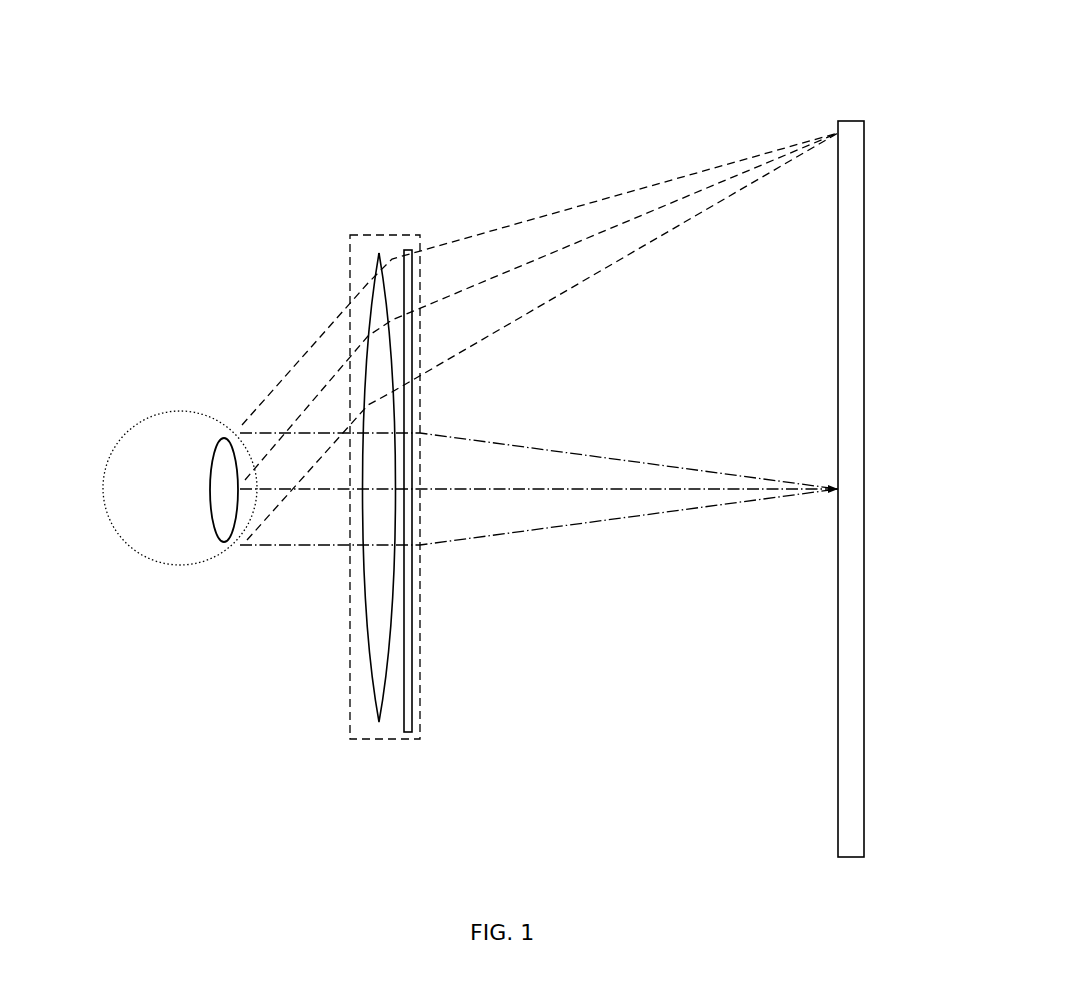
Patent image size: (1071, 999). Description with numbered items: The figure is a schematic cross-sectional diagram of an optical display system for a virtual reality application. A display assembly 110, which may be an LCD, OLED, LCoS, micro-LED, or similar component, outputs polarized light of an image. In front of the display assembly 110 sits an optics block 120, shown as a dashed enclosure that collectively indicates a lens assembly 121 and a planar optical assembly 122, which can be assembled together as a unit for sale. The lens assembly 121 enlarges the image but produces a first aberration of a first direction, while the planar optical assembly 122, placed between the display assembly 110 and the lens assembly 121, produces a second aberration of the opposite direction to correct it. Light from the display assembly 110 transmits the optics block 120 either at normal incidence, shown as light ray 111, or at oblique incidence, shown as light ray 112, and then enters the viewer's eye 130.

The display assembly 110 is at (848, 121).
The light ray 111 is at (730, 415).
The light ray 112 is at (752, 110).
The optics block 120 is at (351, 695).
The lens assembly 121 is at (366, 272).
The planar optical assembly 122 is at (414, 272).
The viewer's eye 130 is at (185, 412).